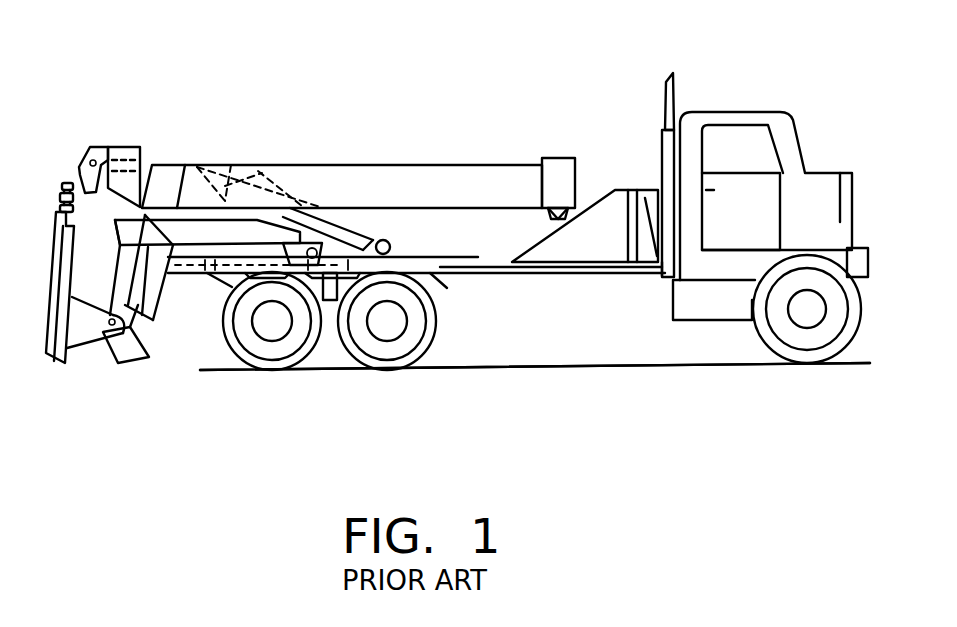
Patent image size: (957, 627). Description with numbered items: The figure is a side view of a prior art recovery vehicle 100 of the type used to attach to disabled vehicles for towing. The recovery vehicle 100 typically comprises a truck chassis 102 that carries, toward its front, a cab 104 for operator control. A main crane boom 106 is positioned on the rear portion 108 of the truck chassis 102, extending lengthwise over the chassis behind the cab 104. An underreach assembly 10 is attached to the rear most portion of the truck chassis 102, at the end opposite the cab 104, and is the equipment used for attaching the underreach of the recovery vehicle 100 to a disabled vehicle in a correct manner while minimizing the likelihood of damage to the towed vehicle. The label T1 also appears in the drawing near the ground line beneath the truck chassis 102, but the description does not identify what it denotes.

The recovery vehicle 100 is at (344, 106).
The main crane boom 106 is at (426, 175).
The rear portion 108 is at (447, 263).
The truck chassis 102 is at (490, 275).
The cab 104 is at (750, 112).
The underreach assembly 10 is at (160, 293).
The truck T1 is at (533, 336).